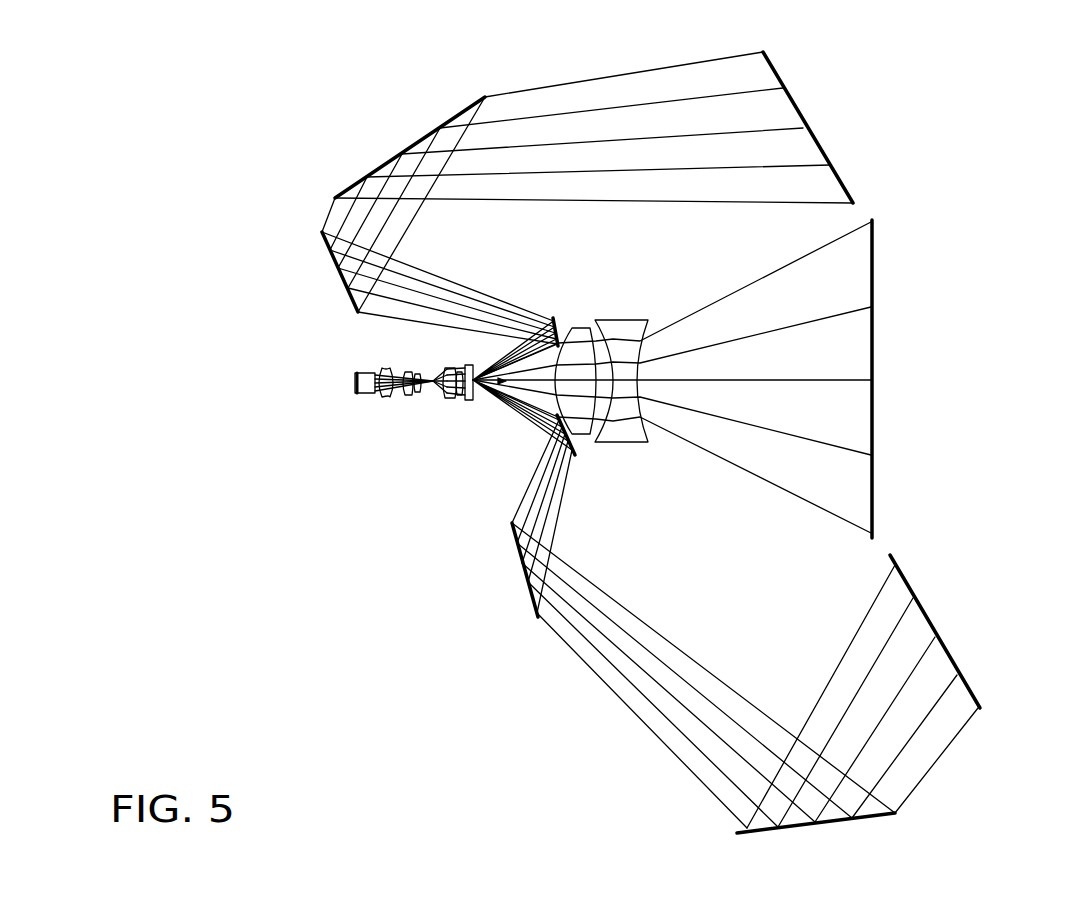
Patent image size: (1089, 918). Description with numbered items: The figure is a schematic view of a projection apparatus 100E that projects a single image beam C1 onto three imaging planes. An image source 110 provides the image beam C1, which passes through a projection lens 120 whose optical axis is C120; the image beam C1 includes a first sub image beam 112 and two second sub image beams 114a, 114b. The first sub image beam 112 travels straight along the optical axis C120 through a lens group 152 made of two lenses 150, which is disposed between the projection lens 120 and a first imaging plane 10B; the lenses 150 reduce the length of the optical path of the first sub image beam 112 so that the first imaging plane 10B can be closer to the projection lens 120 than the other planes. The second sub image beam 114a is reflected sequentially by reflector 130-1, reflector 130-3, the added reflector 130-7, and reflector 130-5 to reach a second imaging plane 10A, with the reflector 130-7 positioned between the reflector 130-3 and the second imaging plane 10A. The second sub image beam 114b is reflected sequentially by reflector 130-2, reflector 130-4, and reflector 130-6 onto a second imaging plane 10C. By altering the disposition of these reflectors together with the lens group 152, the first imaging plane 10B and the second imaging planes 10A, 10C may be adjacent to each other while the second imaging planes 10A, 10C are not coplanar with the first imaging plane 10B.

The projection apparatus 100E is at (219, 126).
The image source 110 is at (360, 405).
The projection lens 120 is at (397, 405).
The image beam C1 is at (434, 390).
The optical axis of the projection lens C120 is at (484, 366).
The reflector 130-1 is at (556, 320).
The reflector 130-2 is at (578, 450).
The reflector 130-3 is at (319, 236).
The reflector 130-4 is at (512, 524).
The reflector 130-5 is at (779, 70).
The reflector 130-6 is at (885, 816).
The reflector 130-7 is at (350, 189).
The lens 150 is at (590, 328).
The lens group 152 is at (632, 340).
The first sub image beam 112 is at (832, 375).
The second sub image beam 114a is at (584, 76).
The second sub image beam 114b is at (616, 712).
The second imaging plane 10A is at (615, 112).
The first imaging plane 10B is at (722, 379).
The second imaging plane 10C is at (774, 680).